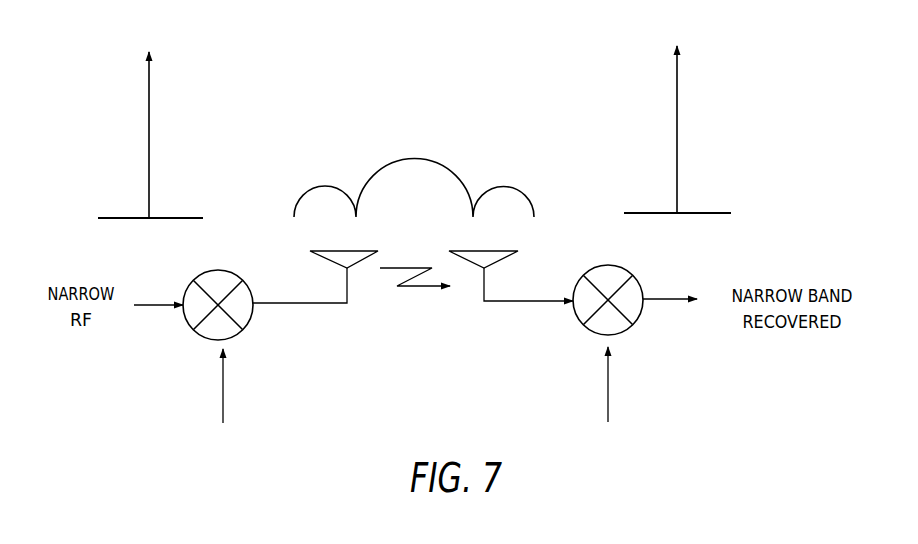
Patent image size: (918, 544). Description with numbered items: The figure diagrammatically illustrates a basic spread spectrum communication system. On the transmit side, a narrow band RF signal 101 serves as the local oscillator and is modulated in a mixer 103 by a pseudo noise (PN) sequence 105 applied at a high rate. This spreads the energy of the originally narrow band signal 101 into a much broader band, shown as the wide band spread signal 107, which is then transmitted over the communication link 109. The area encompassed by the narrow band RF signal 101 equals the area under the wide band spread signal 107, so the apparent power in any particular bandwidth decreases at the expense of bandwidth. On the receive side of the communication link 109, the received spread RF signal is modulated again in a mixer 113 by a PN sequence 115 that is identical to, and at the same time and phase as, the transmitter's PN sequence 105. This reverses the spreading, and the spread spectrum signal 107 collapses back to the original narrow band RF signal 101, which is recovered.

The narrow band RF signal 101 is at (149, 148).
The mixer 103 is at (219, 270).
The pseudo noise (PN) sequence 105 is at (224, 395).
The wide band spread signal 107 is at (456, 172).
The communication link 109 is at (410, 293).
The mixer 113 is at (605, 265).
The PN sequence 115 is at (609, 380).